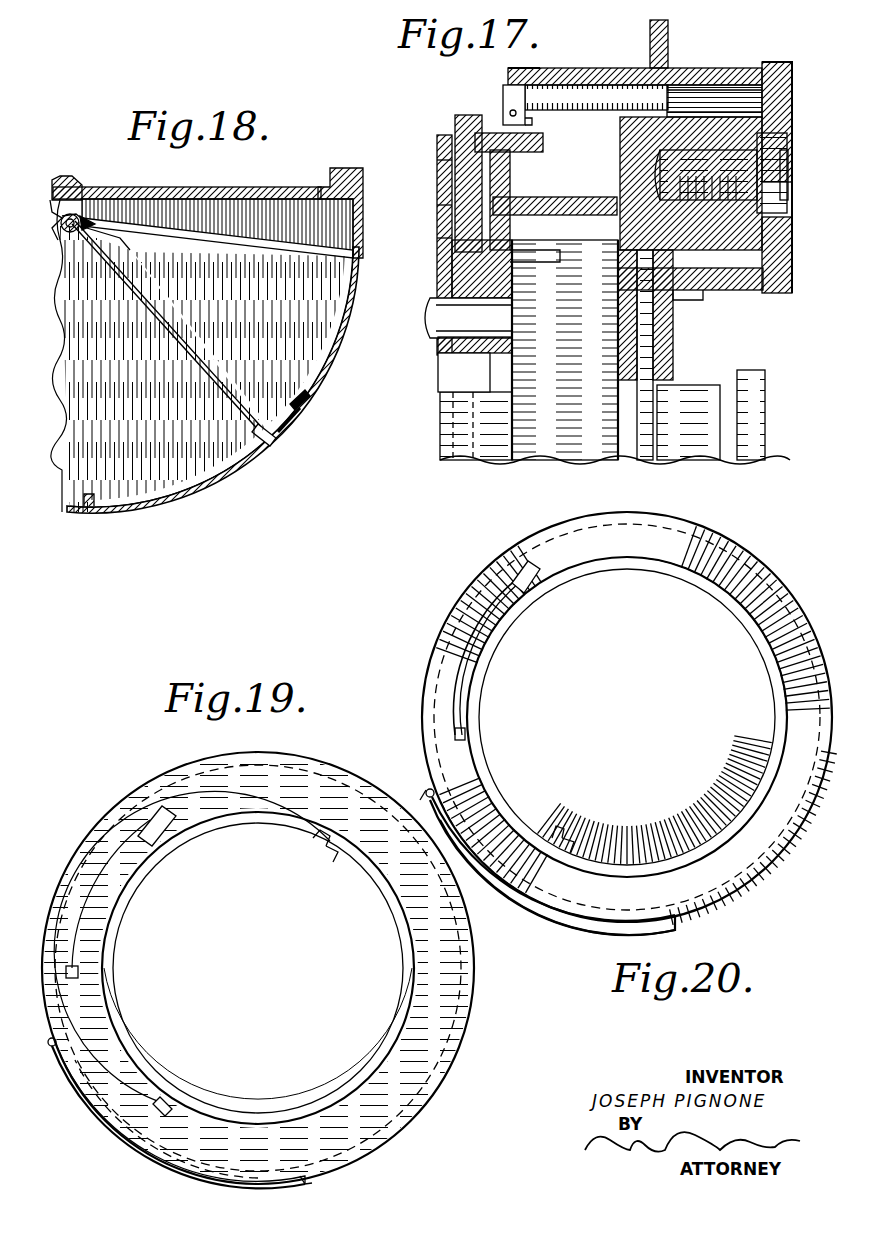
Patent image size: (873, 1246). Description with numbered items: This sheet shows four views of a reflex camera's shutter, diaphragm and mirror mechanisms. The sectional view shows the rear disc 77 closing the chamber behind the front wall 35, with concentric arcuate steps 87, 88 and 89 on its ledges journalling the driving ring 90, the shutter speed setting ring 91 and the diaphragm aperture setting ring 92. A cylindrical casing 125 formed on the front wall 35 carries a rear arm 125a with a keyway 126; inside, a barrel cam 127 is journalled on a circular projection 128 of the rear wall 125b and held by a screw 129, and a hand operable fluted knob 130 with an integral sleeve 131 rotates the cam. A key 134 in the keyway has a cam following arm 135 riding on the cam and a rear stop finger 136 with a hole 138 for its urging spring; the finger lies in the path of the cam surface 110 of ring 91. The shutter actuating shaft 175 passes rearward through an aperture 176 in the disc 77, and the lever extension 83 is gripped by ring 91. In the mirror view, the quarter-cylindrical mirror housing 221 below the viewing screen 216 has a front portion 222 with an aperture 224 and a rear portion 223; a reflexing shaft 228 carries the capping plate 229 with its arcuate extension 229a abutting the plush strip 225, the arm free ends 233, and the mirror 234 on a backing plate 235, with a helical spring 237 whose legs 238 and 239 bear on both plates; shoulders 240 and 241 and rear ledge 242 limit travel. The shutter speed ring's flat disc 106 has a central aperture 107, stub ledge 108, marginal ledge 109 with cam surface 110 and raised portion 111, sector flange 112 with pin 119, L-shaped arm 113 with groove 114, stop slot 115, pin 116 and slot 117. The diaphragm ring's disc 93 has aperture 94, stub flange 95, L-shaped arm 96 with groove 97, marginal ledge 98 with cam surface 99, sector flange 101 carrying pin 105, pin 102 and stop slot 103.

In FIG. 17, the front wall 35 is at (660, 42).
In FIG. 17, the disc 77 is at (512, 288).
In FIG. 17, the rearward extension 83 is at (600, 262).
In FIG. 17, the arcuate step 87 is at (440, 255).
In FIG. 17, the arcuate step 88 is at (450, 238).
In FIG. 17, the arcuate step 89 is at (447, 210).
In FIG. 17, the driving ring 90 is at (445, 170).
In FIG. 17, the shutter speed setting ring 91 is at (440, 142).
In FIG. 19, the shutter speed setting ring 91 is at (366, 1070).
In FIG. 17, the diaphragm aperture setting ring 92 is at (480, 135).
In FIG. 20, the diaphragm aperture setting ring 92 is at (764, 646).
In FIG. 20, the disc portion 93 is at (750, 860).
In FIG. 20, the central aperture 94 is at (480, 722).
In FIG. 20, the annular stub flange 95 is at (700, 580).
In FIG. 20, the L-shaped arm 96 is at (554, 830).
In FIG. 20, the groove 97 is at (572, 842).
In FIG. 20, the marginal ledge 98 is at (790, 606).
In FIG. 20, the stepped cam surface 99 is at (690, 530).
In FIG. 20, the sector flange 101 is at (584, 930).
In FIG. 20, the pin 102 is at (468, 736).
In FIG. 20, the arcuate limiting stop slot 103 is at (514, 590).
In FIG. 20, the pin 105 is at (427, 790).
In FIG. 20, the flat disc 106 is at (524, 898).
In FIG. 19, the flat disc 106 is at (298, 785).
In FIG. 19, the central aperture 107 is at (236, 1115).
In FIG. 19, the stub ledge 108 is at (134, 1055).
In FIG. 19, the marginal ledge 109 is at (418, 1104).
In FIG. 19, the stepped cam surface 110 is at (472, 978).
In FIG. 19, the raised ledge portion 111 is at (310, 1181).
In FIG. 19, the sector flange 112 is at (128, 1146).
In FIG. 17, the L-shaped arm 113 is at (545, 258).
In FIG. 19, the L-shaped arm 113 is at (312, 840).
In FIG. 19, the groove 114 is at (326, 858).
In FIG. 19, the arcuate limiting stop slot 115 is at (148, 832).
In FIG. 19, the pin 116 is at (70, 980).
In FIG. 19, the arcuate slot 117 is at (160, 1097).
In FIG. 19, the pin 119 is at (58, 1046).
In FIG. 17, the cylindrical casing 125 is at (697, 292).
In FIG. 17, the arm 125a is at (530, 78).
In FIG. 17, the rear wall 125b is at (620, 232).
In FIG. 17, the keyway 126 is at (615, 75).
In FIG. 17, the barrel cam 127 is at (790, 262).
In FIG. 17, the circular projection 128 is at (680, 150).
In FIG. 17, the screw 129 is at (787, 166).
In FIG. 17, the fluted knob 130 is at (790, 66).
In FIG. 17, the sleeve 131 is at (762, 70).
In FIG. 17, the key 134 is at (570, 95).
In FIG. 17, the cam following arm 135 is at (665, 120).
In FIG. 17, the stop finger 136 is at (532, 122).
In FIG. 17, the hole 138 is at (511, 110).
In FIG. 17, the shutter actuating shaft 175 is at (427, 312).
In FIG. 17, the aperture 176 is at (440, 332).
In FIG. 18, the ground glass viewing screen 216 is at (262, 187).
In FIG. 18, the reflex mirror housing 221 is at (250, 457).
In FIG. 18, the front portion 222 is at (292, 430).
In FIG. 18, the rear portion 223 is at (196, 500).
In FIG. 18, the aperture 224 is at (300, 410).
In FIG. 18, the strip of plush 225 is at (52, 235).
In FIG. 18, the reflexing shaft 228 is at (74, 232).
In FIG. 18, the capping plate 229 is at (185, 345).
In FIG. 18, the arcuate extension 229a is at (62, 178).
In FIG. 18, the free ends 233 is at (96, 222).
In FIG. 18, the reflexing mirror 234 is at (292, 250).
In FIG. 18, the backing plate 235 is at (240, 252).
In FIG. 18, the helical spring 237 is at (82, 212).
In FIG. 18, the leg 238 is at (92, 236).
In FIG. 18, the leg 239 is at (112, 236).
In FIG. 18, the shoulder 240 is at (366, 230).
In FIG. 18, the shoulder 241 is at (266, 424).
In FIG. 18, the rear ledge 242 is at (96, 496).